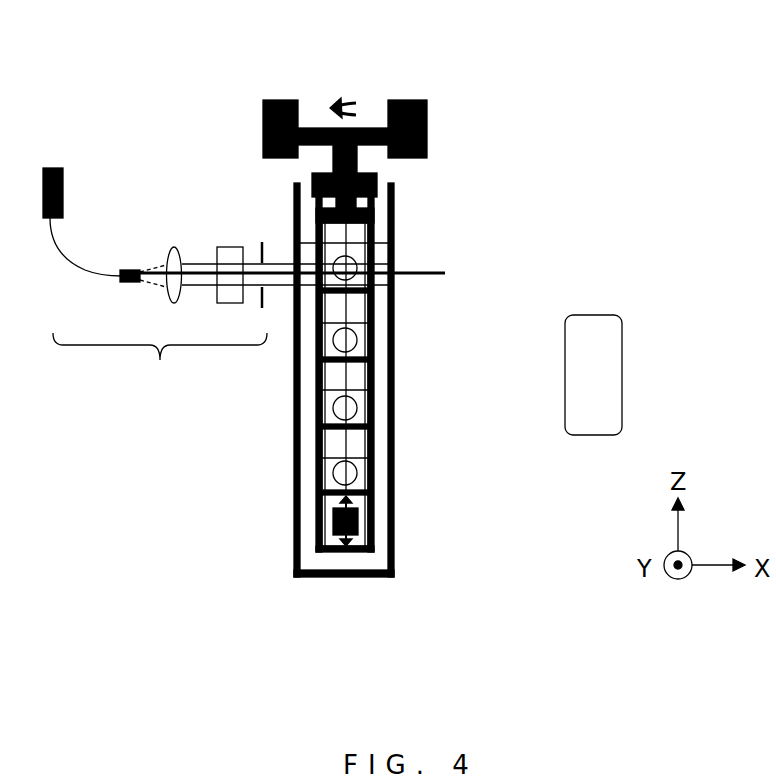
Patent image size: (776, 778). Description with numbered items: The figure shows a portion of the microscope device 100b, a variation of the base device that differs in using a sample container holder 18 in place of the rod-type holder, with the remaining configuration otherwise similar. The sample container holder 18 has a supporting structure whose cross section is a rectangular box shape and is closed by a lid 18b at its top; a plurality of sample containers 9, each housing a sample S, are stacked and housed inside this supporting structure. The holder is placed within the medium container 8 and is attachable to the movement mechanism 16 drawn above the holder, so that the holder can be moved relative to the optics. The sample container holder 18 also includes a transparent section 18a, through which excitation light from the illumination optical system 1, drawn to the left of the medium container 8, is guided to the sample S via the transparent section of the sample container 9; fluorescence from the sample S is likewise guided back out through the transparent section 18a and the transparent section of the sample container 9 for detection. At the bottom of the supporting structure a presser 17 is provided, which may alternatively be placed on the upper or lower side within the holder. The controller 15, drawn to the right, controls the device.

The illumination optical system 1 is at (244, 280).
The medium container 8 is at (296, 537).
The sample container 9 is at (374, 443).
The controller 15 is at (565, 379).
The movement mechanism 16 is at (412, 100).
The presser 17 is at (374, 518).
The sample container holder 18 is at (374, 324).
The transparent section 18a is at (320, 405).
The lid 18b is at (356, 212).
The sample S is at (374, 472).
The microscope device 100b is at (620, 42).